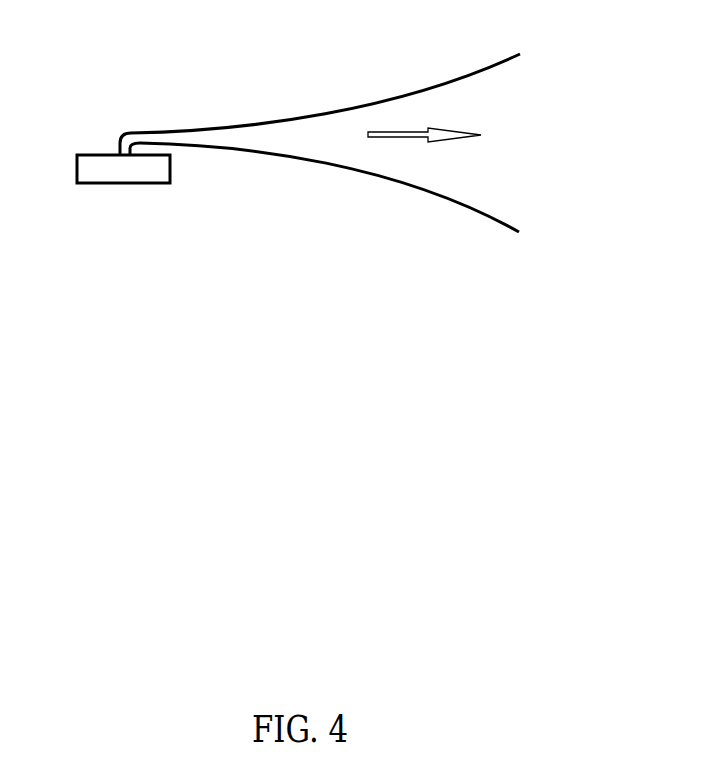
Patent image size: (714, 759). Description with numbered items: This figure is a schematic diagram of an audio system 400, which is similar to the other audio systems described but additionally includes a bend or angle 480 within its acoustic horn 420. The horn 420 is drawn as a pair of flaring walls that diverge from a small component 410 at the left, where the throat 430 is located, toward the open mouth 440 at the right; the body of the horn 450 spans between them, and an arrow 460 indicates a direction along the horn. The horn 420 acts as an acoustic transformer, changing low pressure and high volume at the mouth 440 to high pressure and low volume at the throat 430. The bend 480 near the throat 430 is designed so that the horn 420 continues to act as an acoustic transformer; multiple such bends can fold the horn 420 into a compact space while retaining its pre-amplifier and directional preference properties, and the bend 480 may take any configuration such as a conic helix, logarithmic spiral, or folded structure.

The audio system 400 is at (137, 275).
The light source 410 is at (100, 165).
The acoustic horn 420 is at (440, 90).
The throat 430 is at (120, 134).
The mouth 440 is at (520, 217).
The light guide body 450 is at (322, 140).
The light propagation direction 460 is at (444, 136).
The bend or angle 480 is at (128, 133).